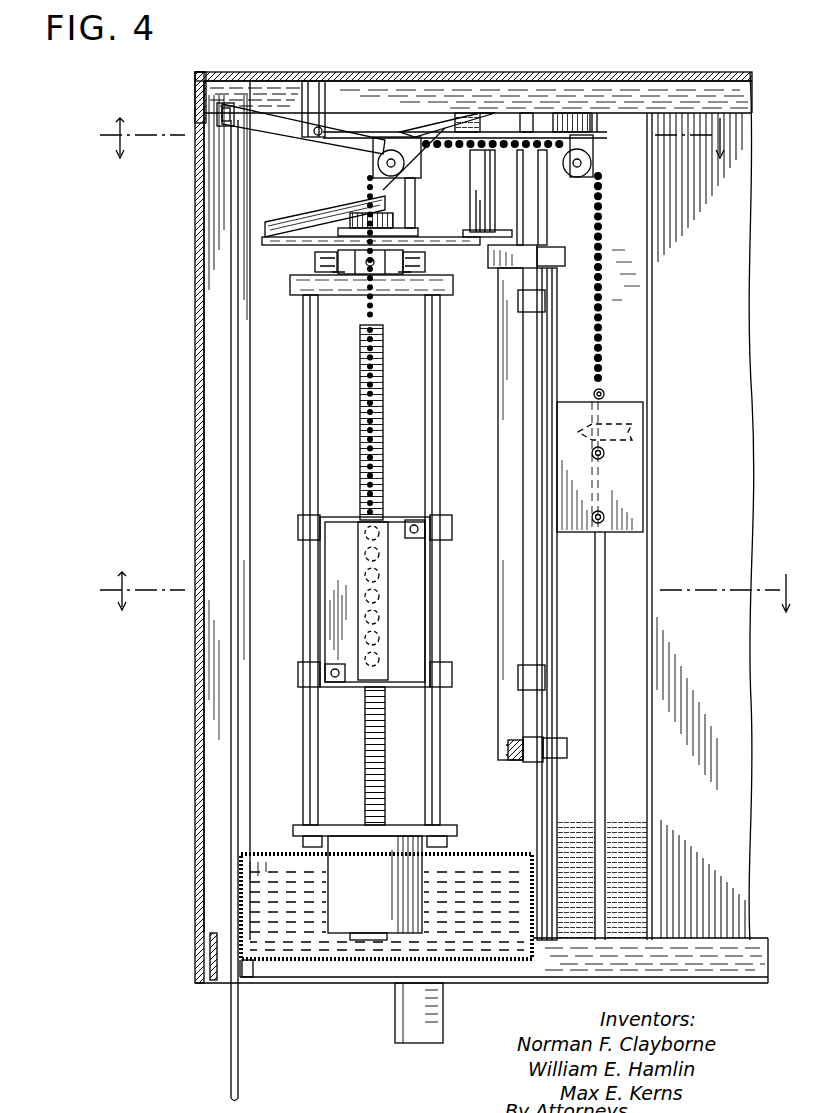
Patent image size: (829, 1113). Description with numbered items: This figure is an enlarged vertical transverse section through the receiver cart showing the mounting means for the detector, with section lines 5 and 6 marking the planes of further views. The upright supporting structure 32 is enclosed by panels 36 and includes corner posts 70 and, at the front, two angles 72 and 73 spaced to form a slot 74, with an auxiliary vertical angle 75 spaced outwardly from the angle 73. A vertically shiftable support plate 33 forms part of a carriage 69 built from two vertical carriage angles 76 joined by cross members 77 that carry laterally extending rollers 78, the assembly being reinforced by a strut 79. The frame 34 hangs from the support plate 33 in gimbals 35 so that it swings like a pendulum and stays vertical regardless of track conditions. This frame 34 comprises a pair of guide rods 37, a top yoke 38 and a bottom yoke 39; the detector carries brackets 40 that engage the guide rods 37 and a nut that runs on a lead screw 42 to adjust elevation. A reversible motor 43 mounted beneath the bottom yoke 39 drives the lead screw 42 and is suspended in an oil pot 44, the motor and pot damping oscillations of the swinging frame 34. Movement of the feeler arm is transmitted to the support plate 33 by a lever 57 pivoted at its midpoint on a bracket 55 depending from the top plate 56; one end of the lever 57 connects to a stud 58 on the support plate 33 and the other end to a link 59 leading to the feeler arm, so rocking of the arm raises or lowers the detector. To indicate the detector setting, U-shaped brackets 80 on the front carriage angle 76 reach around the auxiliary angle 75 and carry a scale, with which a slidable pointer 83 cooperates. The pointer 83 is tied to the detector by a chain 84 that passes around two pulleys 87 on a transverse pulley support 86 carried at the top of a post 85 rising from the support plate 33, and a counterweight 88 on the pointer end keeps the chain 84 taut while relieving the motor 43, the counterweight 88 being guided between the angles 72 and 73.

The section line 5- 5 is at (410, 138).
The section line 6- 6 is at (441, 592).
The upright supporting structure 32 is at (190, 828).
The support plate 33 is at (290, 235).
The frame 34 is at (373, 548).
The gimbals 35 is at (314, 260).
The panels 36 is at (195, 430).
The guide rods 37 is at (303, 411).
The top yoke 38 is at (398, 297).
The bottom yoke 39 is at (458, 826).
The brackets 40 is at (305, 537).
The lead screw 42 is at (364, 742).
The reversible motor 43 is at (366, 874).
The oil pot 44 is at (302, 976).
The bracket 55 is at (326, 102).
The top plate 56 is at (482, 76).
The lever 57 is at (290, 137).
The stud 58 is at (425, 210).
The link 59 is at (240, 447).
The carriage 69 is at (520, 592).
The corner posts 70 is at (217, 633).
The angle 72 is at (640, 797).
The angle 73 is at (576, 857).
The slot 74 is at (605, 770).
The auxiliary vertical angle 75 is at (535, 583).
The vertical carriage angles 76 is at (497, 469).
The cross members 77 is at (513, 762).
The rollers 78 is at (562, 270).
The strut 79 is at (330, 213).
The U-shaped brackets 80 is at (546, 302).
The pointer 83 is at (632, 420).
The chain 84 is at (392, 374).
The post 85 is at (468, 178).
The pulley support 86 is at (443, 134).
The pulleys 87 is at (372, 160).
The counterweight 88 is at (628, 498).